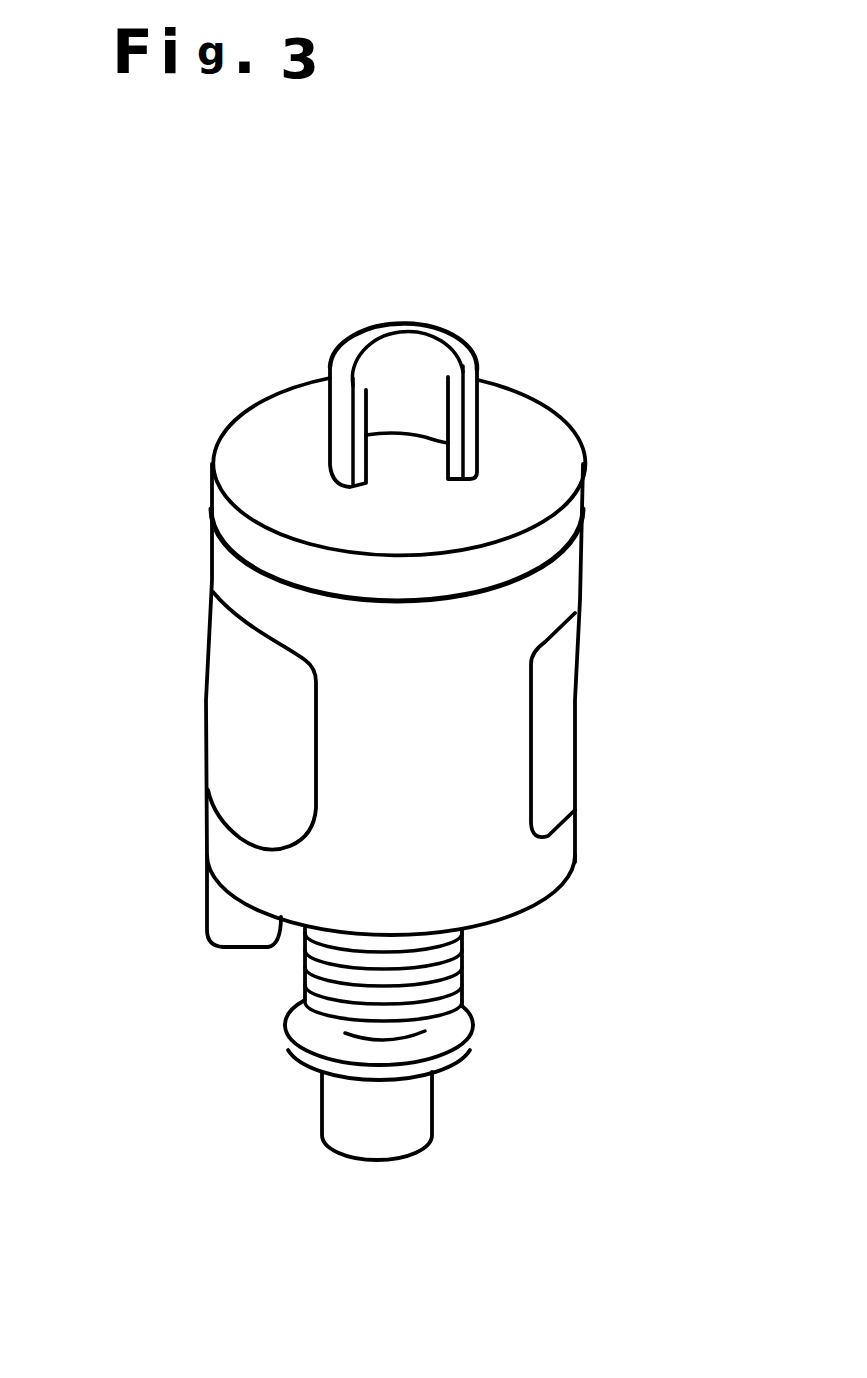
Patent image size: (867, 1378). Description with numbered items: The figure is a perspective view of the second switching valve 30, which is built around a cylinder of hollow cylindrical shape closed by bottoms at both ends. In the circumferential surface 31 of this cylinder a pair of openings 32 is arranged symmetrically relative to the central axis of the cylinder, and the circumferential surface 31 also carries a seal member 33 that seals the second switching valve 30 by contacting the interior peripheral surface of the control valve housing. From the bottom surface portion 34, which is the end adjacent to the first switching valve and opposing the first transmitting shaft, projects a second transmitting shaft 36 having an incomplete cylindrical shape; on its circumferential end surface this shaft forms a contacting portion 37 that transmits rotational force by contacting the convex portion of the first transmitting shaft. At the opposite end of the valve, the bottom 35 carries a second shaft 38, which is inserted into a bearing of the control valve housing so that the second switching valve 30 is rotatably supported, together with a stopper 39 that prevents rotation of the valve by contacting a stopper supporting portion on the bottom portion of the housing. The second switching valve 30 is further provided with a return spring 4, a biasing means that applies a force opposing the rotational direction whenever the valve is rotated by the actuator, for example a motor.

The second switching valve 30 is at (618, 652).
The circumferential surface 31 is at (468, 765).
The openings 32 is at (250, 720).
The seal member 33 is at (587, 510).
The bottom surface portion 34 is at (527, 467).
The bottom surface 35 is at (517, 913).
The second transmitting shaft 36 is at (465, 357).
The contacting portion 37 is at (366, 393).
The second shaft 38 is at (363, 1128).
The stopper 39 is at (245, 915).
The return spring 4 is at (292, 1003).